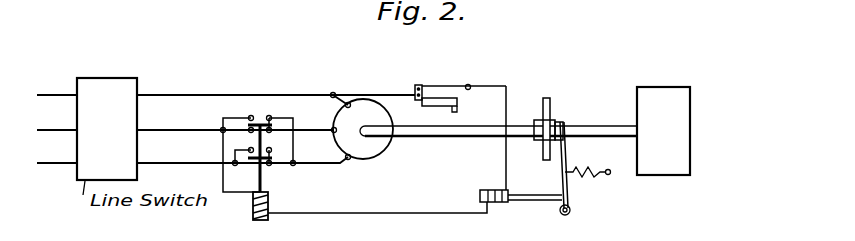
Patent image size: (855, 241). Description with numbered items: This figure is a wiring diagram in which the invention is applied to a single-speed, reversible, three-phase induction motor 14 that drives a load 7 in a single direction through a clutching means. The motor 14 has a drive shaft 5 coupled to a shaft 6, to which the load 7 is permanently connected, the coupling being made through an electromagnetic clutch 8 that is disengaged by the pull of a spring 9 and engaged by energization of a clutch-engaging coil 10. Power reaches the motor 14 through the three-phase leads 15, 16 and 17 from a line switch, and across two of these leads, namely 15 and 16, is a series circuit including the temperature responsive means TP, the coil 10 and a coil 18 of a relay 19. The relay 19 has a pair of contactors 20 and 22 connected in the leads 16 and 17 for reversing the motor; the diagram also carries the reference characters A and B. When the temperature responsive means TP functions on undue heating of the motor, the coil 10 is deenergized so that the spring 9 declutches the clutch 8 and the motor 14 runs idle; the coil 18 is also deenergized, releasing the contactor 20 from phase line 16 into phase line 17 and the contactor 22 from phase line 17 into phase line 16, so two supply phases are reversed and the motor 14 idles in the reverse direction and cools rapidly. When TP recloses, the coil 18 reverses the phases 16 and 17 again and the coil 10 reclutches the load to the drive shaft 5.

The shaft 5 is at (485, 124).
The shaft 6 is at (611, 124).
The load 7 is at (691, 117).
The electromagnetic clutch 8 is at (553, 105).
The spring 9 is at (590, 171).
The coil 10 is at (490, 204).
The induction motor 14 is at (377, 156).
The three-phase lead 15 is at (178, 94).
The three-phase lead 16 is at (178, 124).
The three-phase lead 17 is at (175, 153).
The coil 18 is at (253, 210).
The relay 19 is at (304, 197).
The contactor 20 is at (259, 122).
The contactor 22 is at (253, 166).
The contact A is at (470, 86).
The conductor B is at (222, 125).
The temperature responsive means TP is at (447, 107).